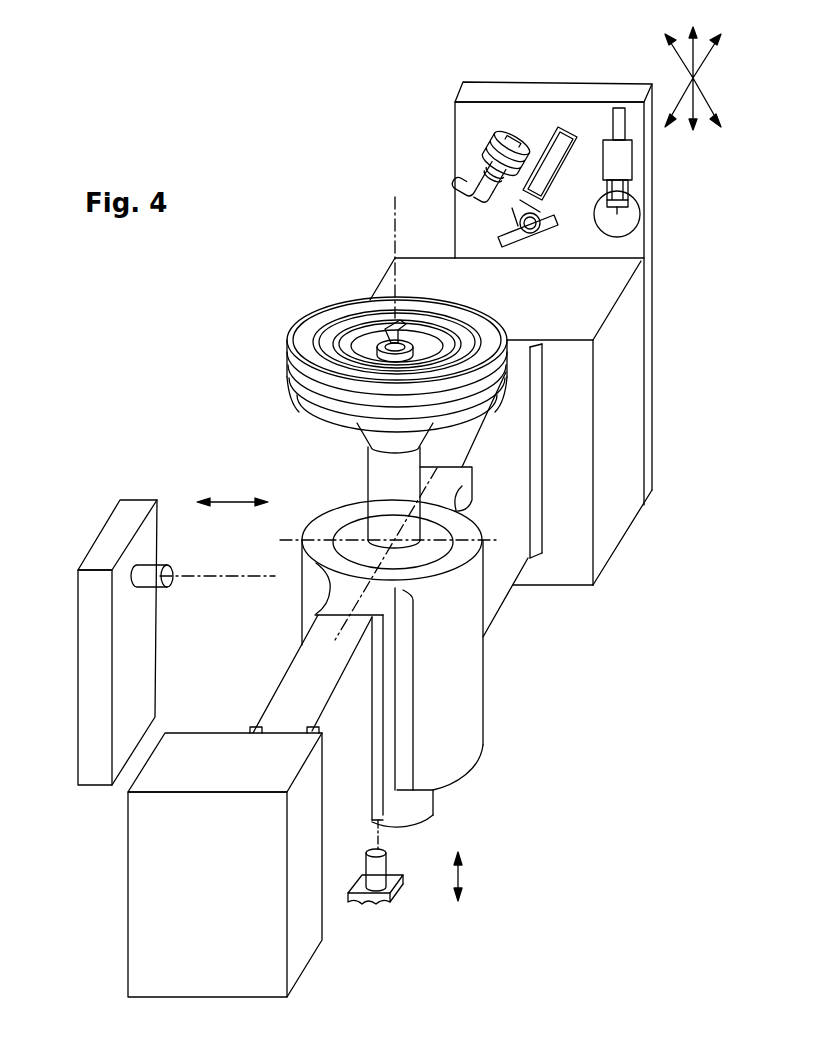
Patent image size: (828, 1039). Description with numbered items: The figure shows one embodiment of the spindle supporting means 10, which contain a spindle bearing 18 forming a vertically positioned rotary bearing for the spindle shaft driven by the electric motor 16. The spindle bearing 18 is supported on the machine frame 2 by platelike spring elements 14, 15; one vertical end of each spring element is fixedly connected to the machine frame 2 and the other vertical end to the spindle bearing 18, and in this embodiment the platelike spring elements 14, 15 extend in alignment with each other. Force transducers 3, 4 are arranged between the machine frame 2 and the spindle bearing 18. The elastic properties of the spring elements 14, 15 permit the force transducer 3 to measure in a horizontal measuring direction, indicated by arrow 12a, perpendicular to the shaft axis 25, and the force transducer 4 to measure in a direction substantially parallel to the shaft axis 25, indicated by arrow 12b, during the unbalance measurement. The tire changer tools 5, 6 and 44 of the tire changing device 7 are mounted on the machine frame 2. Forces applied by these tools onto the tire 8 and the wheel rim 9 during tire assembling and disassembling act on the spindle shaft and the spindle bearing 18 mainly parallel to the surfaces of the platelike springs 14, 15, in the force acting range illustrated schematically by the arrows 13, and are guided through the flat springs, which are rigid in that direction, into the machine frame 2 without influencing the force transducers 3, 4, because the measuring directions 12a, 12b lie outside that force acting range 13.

The machine frame 2 is at (534, 92).
The force transducer 3 is at (163, 565).
The force transducer 4 is at (392, 860).
The tire changer tool 5 is at (480, 193).
The tire changer tool 6 is at (537, 224).
The tire changing device 7 is at (554, 151).
The tire 8 is at (365, 362).
The wheel rim 9 is at (353, 343).
The spindle supporting means 10 is at (397, 605).
The arrow (horizontal measuring direction) 12a is at (232, 489).
The arrow (measuring direction parallel to shaft axis) 12b is at (461, 877).
The arrows (force acting range) 13 is at (695, 79).
The platelike spring element 14 is at (303, 692).
The platelike spring element 15 is at (496, 579).
The electric motor 16 is at (420, 807).
The spindle bearing 18 is at (462, 682).
The shaft axis 25 is at (394, 221).
The tire changer tool 44 is at (640, 215).